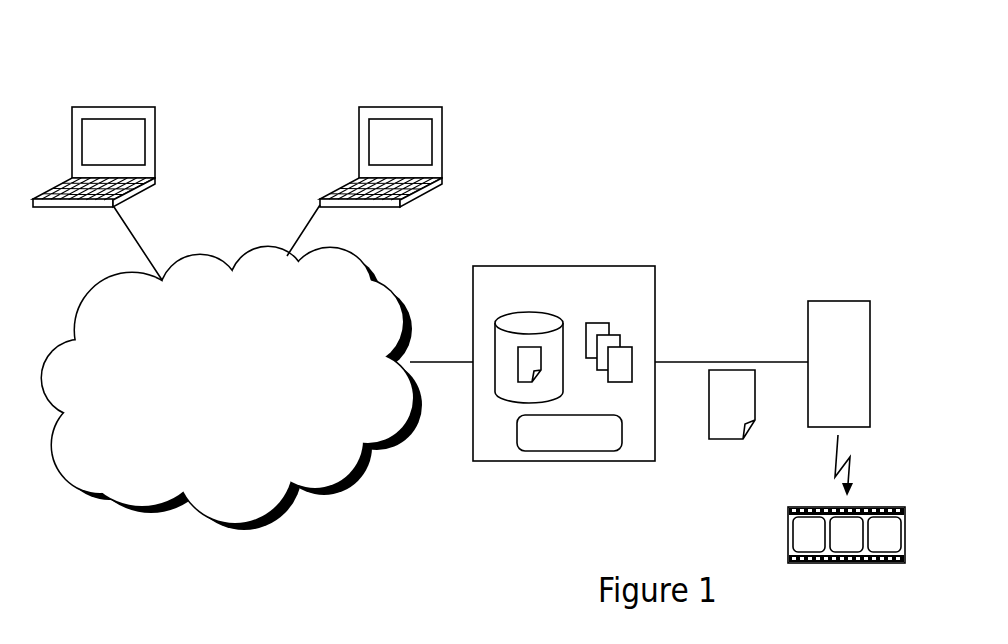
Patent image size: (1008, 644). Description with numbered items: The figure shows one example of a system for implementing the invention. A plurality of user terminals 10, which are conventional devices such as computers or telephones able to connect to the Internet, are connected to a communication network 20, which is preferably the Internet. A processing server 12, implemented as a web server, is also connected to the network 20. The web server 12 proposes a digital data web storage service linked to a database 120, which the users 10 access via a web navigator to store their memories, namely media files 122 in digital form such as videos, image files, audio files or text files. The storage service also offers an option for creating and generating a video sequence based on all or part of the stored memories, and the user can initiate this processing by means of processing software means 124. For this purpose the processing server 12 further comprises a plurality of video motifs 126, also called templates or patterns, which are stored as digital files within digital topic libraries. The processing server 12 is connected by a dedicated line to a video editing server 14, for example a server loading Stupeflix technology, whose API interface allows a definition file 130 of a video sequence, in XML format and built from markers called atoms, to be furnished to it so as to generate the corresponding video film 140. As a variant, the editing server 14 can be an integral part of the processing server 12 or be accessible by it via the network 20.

The user terminals 10 is at (113, 107).
The communication network 20 is at (201, 393).
The processing server 12 is at (552, 301).
The database 120 is at (476, 363).
The media files 122 is at (518, 364).
The processing software means 124 is at (553, 444).
The video motifs 126 is at (626, 318).
The definition file 130 is at (732, 404).
The video editing server 14 is at (828, 377).
The video film 140 is at (846, 551).